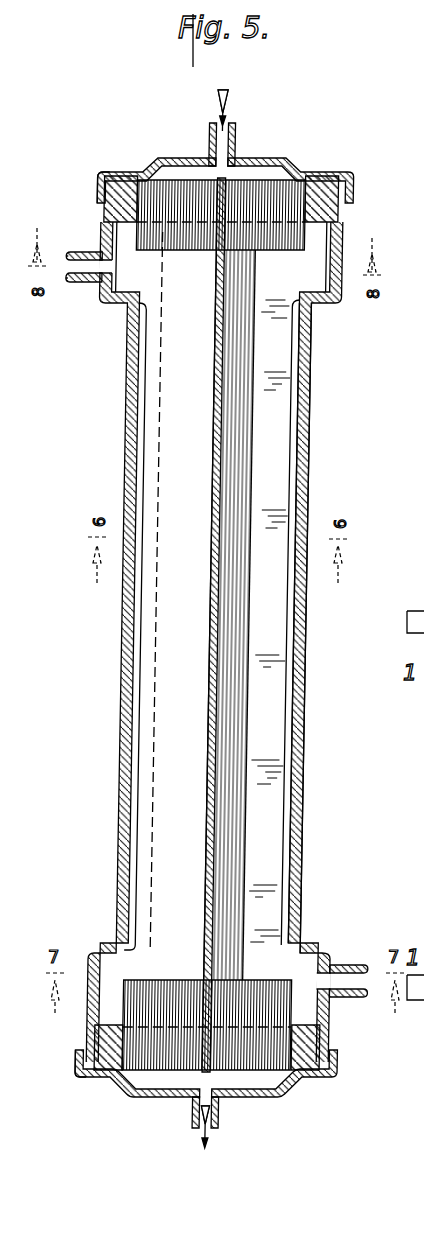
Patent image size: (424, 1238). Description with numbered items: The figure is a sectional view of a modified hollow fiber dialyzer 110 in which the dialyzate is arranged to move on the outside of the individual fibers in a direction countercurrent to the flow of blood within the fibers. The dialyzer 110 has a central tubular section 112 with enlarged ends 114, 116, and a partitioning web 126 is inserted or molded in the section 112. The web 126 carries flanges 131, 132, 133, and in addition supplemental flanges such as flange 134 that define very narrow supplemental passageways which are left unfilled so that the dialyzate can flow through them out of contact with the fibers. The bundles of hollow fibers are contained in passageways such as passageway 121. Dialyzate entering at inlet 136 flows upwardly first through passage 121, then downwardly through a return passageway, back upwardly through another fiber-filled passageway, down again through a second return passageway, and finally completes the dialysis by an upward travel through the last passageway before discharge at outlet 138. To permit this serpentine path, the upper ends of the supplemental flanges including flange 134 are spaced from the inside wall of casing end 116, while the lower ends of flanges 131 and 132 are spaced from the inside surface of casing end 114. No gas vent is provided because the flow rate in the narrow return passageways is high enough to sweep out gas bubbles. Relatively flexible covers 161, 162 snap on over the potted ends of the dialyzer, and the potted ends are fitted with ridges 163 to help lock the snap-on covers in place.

The dialyzer 110 is at (312, 613).
The central tubular section 112 is at (311, 365).
The enlarged end 114 is at (325, 1034).
The enlarged end 116 is at (338, 228).
The passageway 121 is at (288, 803).
The partitioning web 126 is at (224, 452).
The flange 131 is at (238, 720).
The flange 132 is at (165, 690).
The flange 133 is at (214, 532).
The supplemental flange 134 is at (271, 757).
The inlet 136 is at (345, 977).
The outlet 138 is at (87, 250).
The snap-on cover 161 is at (162, 1097).
The snap-on cover 162 is at (273, 156).
The ridge 163 is at (98, 182).